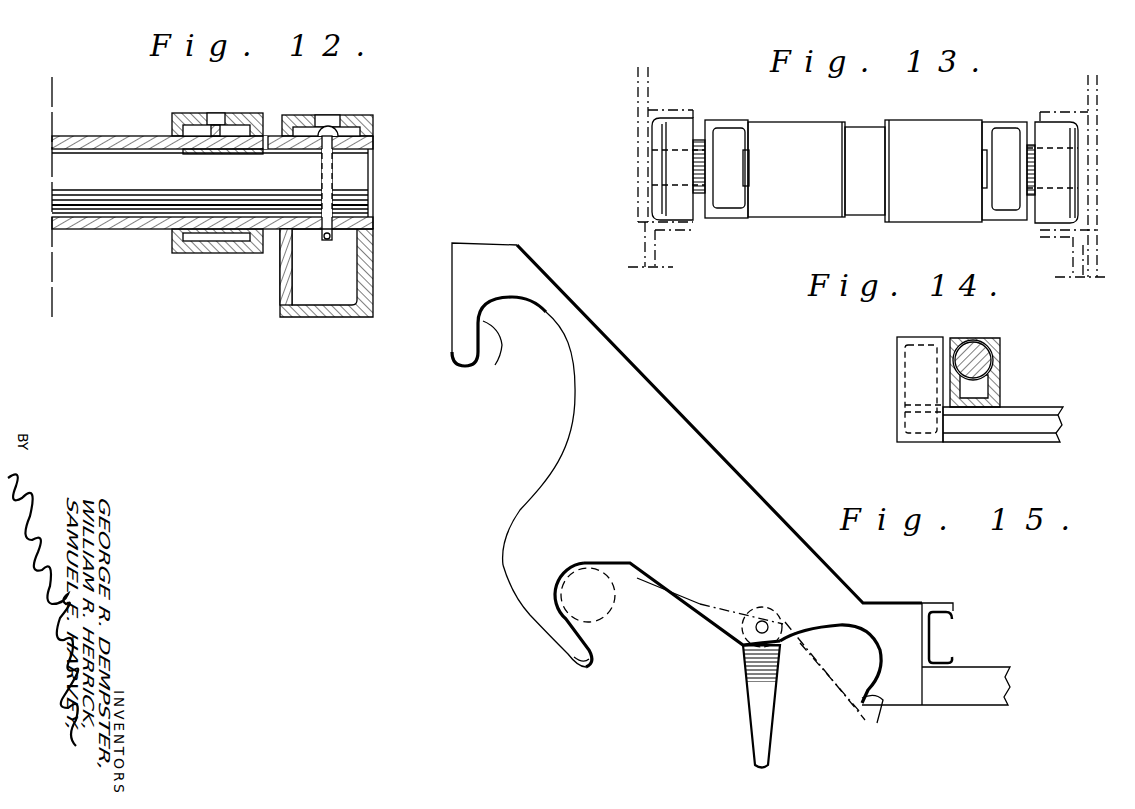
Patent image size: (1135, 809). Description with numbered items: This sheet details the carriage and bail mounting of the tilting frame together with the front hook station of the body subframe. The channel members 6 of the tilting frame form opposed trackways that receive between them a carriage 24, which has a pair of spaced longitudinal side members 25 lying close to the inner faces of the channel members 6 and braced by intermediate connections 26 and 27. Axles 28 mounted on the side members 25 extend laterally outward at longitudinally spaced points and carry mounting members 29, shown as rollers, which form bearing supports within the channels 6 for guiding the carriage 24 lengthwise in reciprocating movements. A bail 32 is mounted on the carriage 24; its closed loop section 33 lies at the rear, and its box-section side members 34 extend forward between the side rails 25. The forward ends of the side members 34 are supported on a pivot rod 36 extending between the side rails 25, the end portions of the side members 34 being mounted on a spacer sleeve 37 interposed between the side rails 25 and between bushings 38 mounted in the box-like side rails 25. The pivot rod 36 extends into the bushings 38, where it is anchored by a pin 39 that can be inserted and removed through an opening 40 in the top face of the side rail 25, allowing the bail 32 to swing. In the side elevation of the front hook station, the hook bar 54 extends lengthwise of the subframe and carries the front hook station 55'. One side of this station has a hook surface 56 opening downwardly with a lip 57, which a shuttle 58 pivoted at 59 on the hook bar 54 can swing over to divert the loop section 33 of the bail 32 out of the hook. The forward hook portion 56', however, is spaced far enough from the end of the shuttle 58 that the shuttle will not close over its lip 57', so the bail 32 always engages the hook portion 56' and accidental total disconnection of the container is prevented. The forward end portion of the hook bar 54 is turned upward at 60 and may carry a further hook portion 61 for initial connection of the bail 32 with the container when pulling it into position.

In FIG. 13, the channel members 6 is at (866, 161).
In FIG. 13, the carriage 24 is at (962, 144).
In FIG. 12, the longitudinal side members 25 is at (326, 294).
In FIG. 13, the longitudinal side members 25 is at (866, 165).
In FIG. 14, the longitudinal side members 25 is at (883, 389).
In FIG. 13, the intermediate connection 26 is at (816, 189).
In FIG. 14, the intermediate connection 27 is at (1003, 441).
In FIG. 13, the axles 28 is at (865, 170).
In FIG. 13, the mounting members 29 is at (827, 170).
In FIG. 15, the bail 32 is at (614, 610).
In FIG. 14, the loop section 33 is at (1008, 346).
In FIG. 12, the bail side members 34 is at (207, 202).
In FIG. 14, the bail side members 34 is at (1018, 372).
In FIG. 12, the pivot rod 36 is at (210, 228).
In FIG. 12, the spacer sleeve 37 is at (212, 161).
In FIG. 12, the bushings 38 is at (409, 148).
In FIG. 12, the pin 39 is at (378, 197).
In FIG. 12, the opening 40 is at (339, 106).
In FIG. 15, the hook bar 54 is at (970, 654).
In FIG. 15, the front hook station 55' is at (744, 633).
In FIG. 15, the hook surfaces 56 is at (937, 637).
In FIG. 15, the hook portion 56' is at (530, 615).
In FIG. 15, the hook lips 57 is at (849, 686).
In FIG. 15, the lip 57' is at (560, 684).
In FIG. 15, the shuttle 58 is at (725, 706).
In FIG. 15, the pivot 59 is at (747, 603).
In FIG. 15, the upturned forward end portion 60 is at (719, 424).
In FIG. 15, the hook portion 61 is at (513, 404).